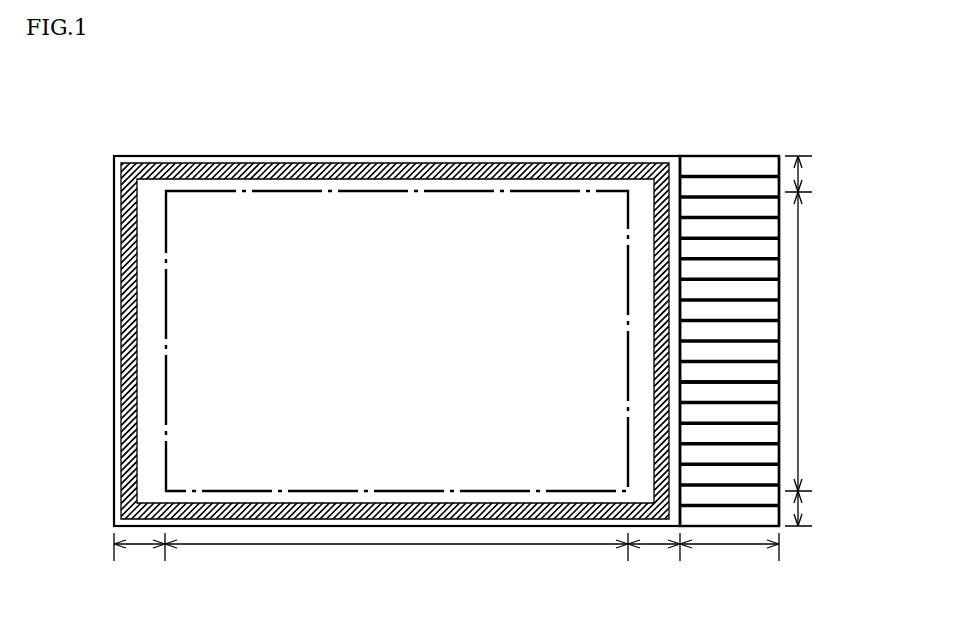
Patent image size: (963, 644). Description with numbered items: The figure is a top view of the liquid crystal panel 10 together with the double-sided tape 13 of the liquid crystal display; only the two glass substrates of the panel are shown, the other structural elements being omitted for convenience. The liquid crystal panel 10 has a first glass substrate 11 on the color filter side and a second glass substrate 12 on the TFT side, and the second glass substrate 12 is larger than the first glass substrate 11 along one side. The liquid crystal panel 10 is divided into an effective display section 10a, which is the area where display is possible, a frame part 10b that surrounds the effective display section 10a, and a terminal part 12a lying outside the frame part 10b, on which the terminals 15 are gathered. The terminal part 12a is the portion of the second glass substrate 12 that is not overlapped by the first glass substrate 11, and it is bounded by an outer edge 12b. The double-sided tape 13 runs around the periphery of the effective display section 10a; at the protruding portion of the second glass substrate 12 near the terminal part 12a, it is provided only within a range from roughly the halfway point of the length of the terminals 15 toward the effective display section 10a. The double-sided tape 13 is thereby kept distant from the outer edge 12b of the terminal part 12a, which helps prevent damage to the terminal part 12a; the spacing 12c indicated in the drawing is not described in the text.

The liquid crystal panel 10 is at (120, 133).
The effective display section 10a is at (387, 546).
The frame part 10b is at (137, 546).
The first glass substrate 11 is at (690, 178).
The second glass substrate 12 is at (755, 156).
The terminal part 12a is at (737, 546).
The outer edge 12b is at (793, 271).
The gap between light emitting elements 12c is at (696, 378).
The double-sided tape 13 is at (332, 165).
The terminals 15 is at (712, 176).